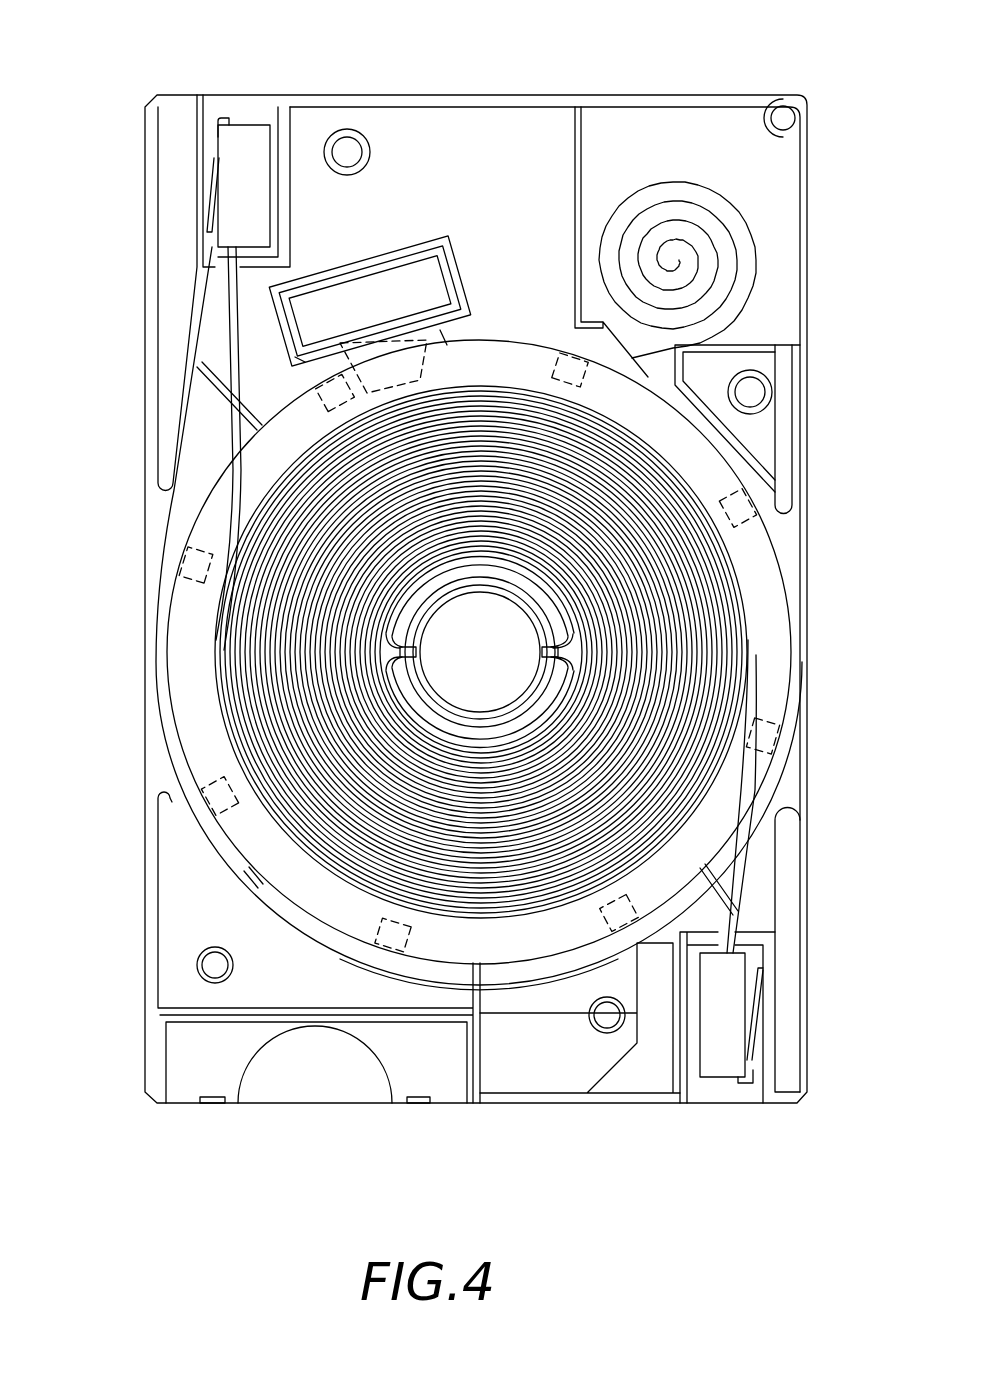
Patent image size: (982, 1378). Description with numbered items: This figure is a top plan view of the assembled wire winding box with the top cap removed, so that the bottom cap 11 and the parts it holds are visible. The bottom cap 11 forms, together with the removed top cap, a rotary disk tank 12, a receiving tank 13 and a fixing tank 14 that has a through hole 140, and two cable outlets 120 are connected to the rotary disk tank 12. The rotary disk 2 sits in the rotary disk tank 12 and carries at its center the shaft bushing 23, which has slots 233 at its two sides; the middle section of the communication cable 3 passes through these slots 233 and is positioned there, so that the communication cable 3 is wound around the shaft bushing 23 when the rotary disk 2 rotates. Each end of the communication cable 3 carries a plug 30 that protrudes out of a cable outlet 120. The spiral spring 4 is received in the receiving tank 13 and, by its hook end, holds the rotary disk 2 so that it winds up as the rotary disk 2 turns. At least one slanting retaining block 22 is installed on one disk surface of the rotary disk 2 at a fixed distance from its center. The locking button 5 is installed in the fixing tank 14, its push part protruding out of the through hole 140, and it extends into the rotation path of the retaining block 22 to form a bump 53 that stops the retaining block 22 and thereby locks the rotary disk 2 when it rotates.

The rotary disk 2 is at (760, 552).
The communication cable 3 is at (750, 673).
The spiral spring 4 is at (740, 248).
The locking button 5 is at (430, 277).
The bottom cap 11 is at (486, 100).
The rotary disk tank 12 is at (176, 768).
The receiving tank 13 is at (708, 135).
The fixing tank 14 is at (363, 265).
The retaining block 22 is at (563, 352).
The shaft bushing 23 is at (495, 633).
The plug 30 is at (240, 135).
The bump 53 is at (447, 337).
The cable outlet 120 is at (263, 100).
The through hole 140 is at (446, 276).
The slot 233 is at (416, 652).